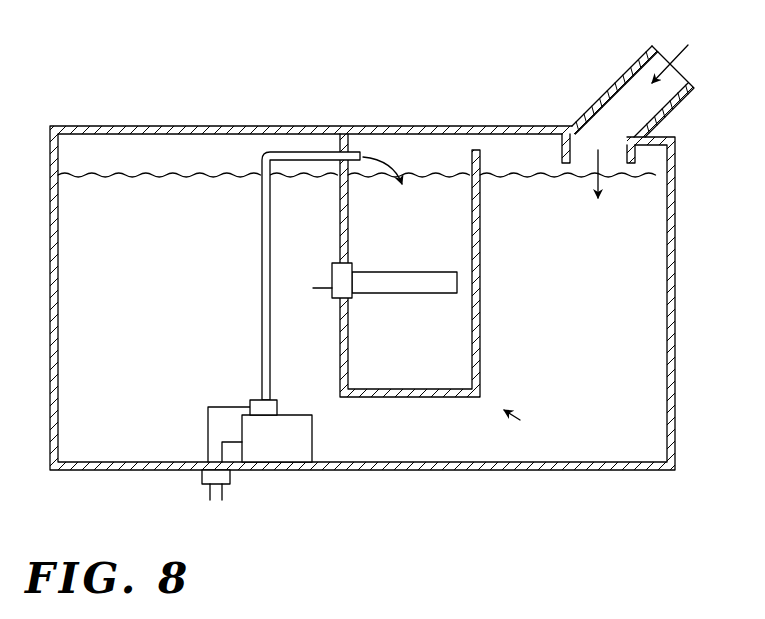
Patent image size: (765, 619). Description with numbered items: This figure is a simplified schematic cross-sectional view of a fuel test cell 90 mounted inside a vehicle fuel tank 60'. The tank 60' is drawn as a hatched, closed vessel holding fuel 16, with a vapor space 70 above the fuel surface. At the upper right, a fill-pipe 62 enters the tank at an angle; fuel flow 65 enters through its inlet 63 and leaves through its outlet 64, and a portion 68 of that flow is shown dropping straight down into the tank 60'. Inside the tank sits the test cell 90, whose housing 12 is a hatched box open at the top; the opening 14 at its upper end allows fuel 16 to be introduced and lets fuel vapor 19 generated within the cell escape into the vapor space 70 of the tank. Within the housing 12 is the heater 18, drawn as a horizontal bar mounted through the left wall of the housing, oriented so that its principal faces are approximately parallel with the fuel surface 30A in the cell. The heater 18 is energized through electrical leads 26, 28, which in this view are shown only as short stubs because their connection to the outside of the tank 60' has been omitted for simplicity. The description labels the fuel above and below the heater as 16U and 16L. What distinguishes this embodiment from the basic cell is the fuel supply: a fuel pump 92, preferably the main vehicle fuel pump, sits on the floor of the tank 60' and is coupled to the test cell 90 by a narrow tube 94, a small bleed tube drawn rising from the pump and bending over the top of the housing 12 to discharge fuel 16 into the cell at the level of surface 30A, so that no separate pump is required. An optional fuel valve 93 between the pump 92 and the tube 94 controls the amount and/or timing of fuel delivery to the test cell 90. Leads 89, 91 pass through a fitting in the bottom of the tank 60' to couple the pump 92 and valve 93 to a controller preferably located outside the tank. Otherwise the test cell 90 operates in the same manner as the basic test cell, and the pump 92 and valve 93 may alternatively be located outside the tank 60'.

The housing 12 is at (412, 398).
The opening 14 is at (477, 138).
The fuel 16 is at (391, 155).
The upper portion of inner compartment 16U is at (422, 225).
The lower portion of inner compartment 16L is at (393, 353).
The heater 18 is at (389, 271).
The fuel vapor 19 is at (428, 147).
The electrical lead 26 is at (313, 273).
The electrical lead 28 is at (313, 288).
The fuel surface 30A is at (379, 187).
The fuel tank 60' is at (391, 298).
The fill-pipe 62 is at (677, 108).
The inlet 63 is at (612, 106).
The outlet 64 is at (585, 152).
The fuel flow 65 is at (682, 55).
The portion of fuel flow 68 is at (603, 198).
The vapor space 70 is at (177, 145).
The lead 89 is at (227, 497).
The fuel test cell 90 is at (527, 428).
The lead 91 is at (207, 497).
The fuel pump 92 is at (313, 447).
The fuel valve 93 is at (278, 407).
The tube 94 is at (261, 217).